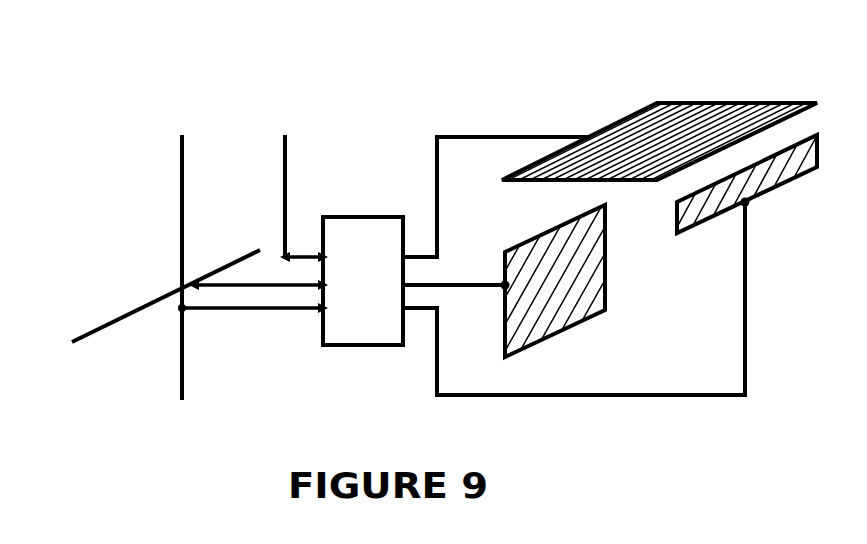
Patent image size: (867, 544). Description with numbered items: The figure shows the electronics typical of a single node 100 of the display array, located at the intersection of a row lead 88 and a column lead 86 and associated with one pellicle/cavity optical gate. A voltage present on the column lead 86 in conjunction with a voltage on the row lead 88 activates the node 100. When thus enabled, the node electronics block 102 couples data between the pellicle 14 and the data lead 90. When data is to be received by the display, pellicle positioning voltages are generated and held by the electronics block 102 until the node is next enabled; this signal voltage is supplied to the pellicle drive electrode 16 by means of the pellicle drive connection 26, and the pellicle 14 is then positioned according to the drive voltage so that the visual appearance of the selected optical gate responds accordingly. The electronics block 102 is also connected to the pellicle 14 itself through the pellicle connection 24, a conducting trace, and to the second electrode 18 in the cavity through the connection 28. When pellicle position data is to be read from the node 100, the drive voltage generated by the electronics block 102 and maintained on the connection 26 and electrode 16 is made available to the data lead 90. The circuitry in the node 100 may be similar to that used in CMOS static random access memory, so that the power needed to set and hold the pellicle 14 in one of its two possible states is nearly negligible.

The node 100 is at (188, 88).
The column lead 86 is at (178, 175).
The data lead 90 is at (282, 158).
The row lead 88 is at (118, 318).
The node electronics block 102 is at (393, 193).
The pellicle connection 24 is at (524, 130).
The pellicle drive connection 26 is at (478, 280).
The connection 28 is at (712, 392).
The pellicle 14 is at (633, 110).
The pellicle drive electrode 16 is at (557, 220).
The electrode 18 is at (762, 192).